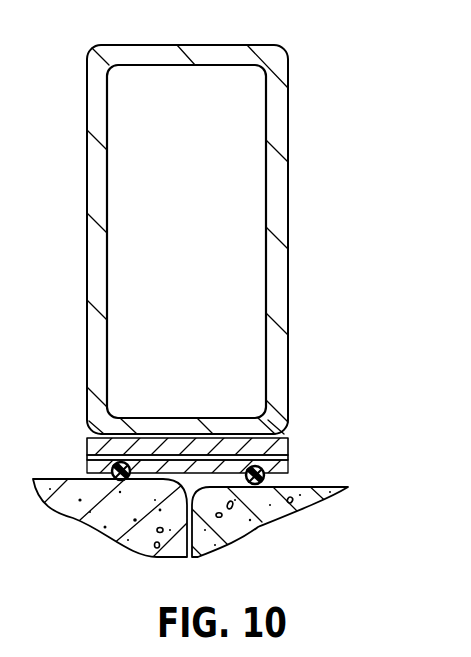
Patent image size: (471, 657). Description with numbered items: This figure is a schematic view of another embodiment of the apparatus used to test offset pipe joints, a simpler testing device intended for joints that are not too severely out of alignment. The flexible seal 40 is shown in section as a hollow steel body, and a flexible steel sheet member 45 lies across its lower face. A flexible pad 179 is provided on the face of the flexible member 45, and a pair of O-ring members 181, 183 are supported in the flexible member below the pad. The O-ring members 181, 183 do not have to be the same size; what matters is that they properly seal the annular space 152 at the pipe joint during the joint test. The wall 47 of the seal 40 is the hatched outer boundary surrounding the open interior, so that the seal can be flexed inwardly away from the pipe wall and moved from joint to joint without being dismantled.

The flexible seal 40 is at (120, 243).
The housing wall 47 is at (88, 70).
The flexible steel sheet member 45 is at (288, 445).
The flexible pad 179 is at (288, 461).
The O-ring member 181 is at (112, 478).
The O-ring member 183 is at (265, 477).
The annular space 152 is at (196, 480).